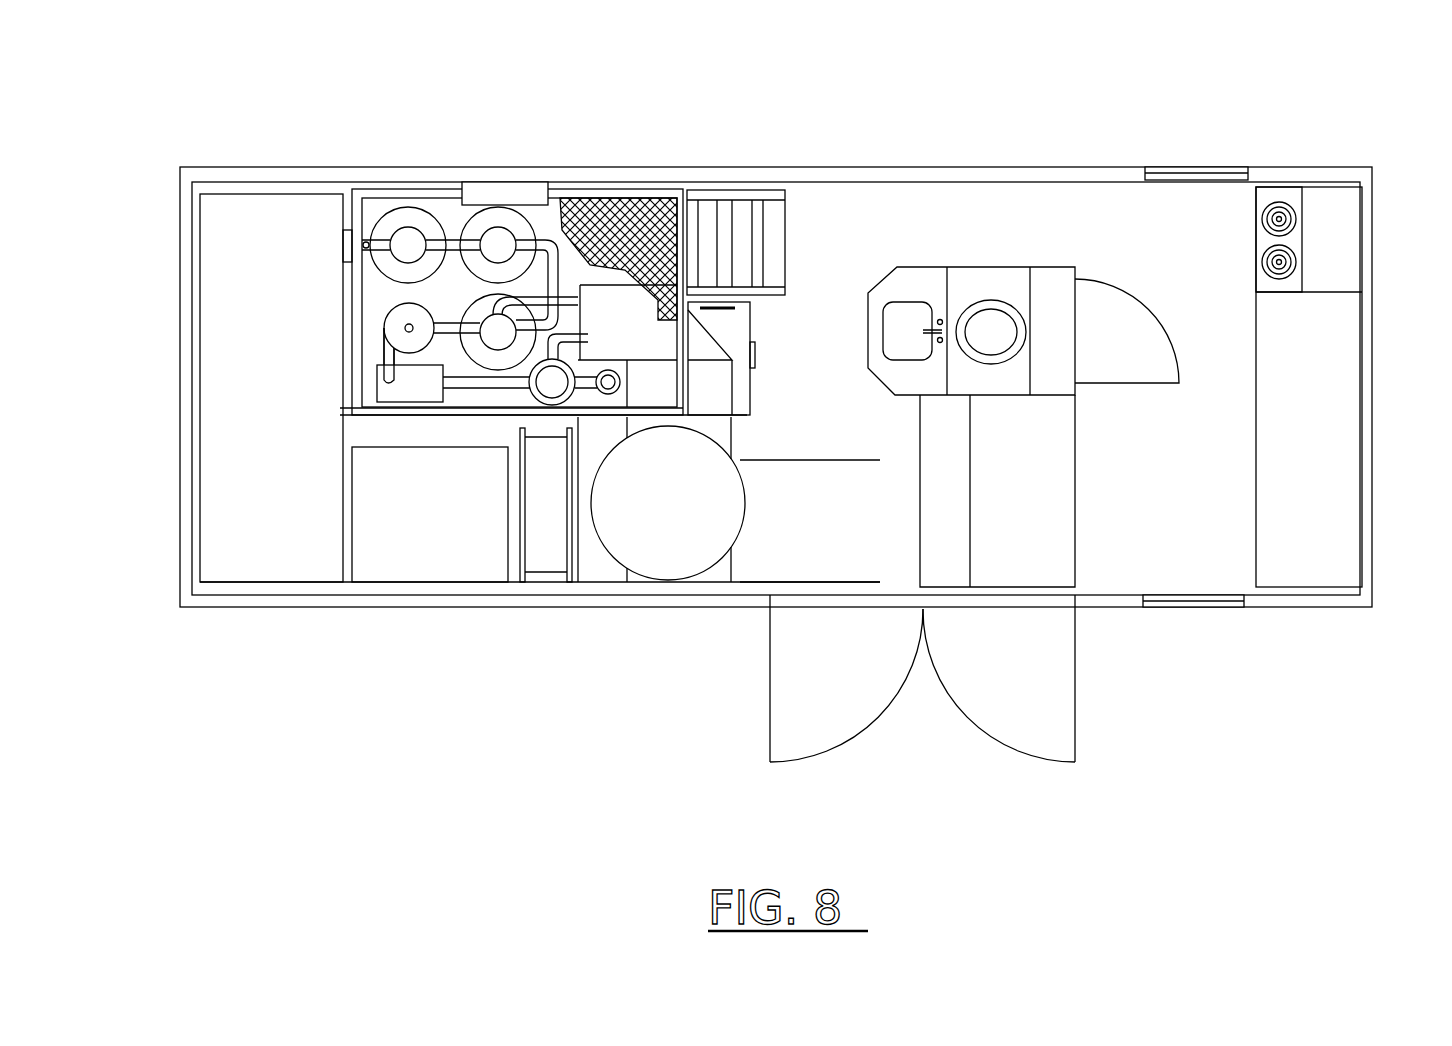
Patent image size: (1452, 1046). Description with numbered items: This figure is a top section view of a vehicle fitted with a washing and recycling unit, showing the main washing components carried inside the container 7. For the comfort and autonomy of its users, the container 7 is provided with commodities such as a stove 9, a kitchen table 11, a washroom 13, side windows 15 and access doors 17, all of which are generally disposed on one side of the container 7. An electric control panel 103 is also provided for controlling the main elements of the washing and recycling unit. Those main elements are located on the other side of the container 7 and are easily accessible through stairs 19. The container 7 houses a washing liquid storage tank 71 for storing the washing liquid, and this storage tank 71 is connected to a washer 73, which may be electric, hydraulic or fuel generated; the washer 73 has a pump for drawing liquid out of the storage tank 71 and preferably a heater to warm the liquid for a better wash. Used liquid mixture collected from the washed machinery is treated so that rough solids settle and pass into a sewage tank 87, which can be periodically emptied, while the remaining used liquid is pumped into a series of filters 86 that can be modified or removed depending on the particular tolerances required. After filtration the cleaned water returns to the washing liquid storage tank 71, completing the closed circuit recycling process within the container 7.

The container 7 is at (180, 352).
The stove 9 is at (1338, 224).
The kitchen table 11 is at (1350, 390).
The washroom 13 is at (1005, 263).
The side windows 15 is at (1197, 168).
The access doors 17 is at (1077, 762).
The stairs 19 is at (766, 190).
The washing liquid storage tank 71 is at (306, 472).
The washer 73 is at (456, 539).
The series of filters 86 is at (438, 207).
The sewage tank 87 is at (748, 588).
The electric control panel 103 is at (527, 188).